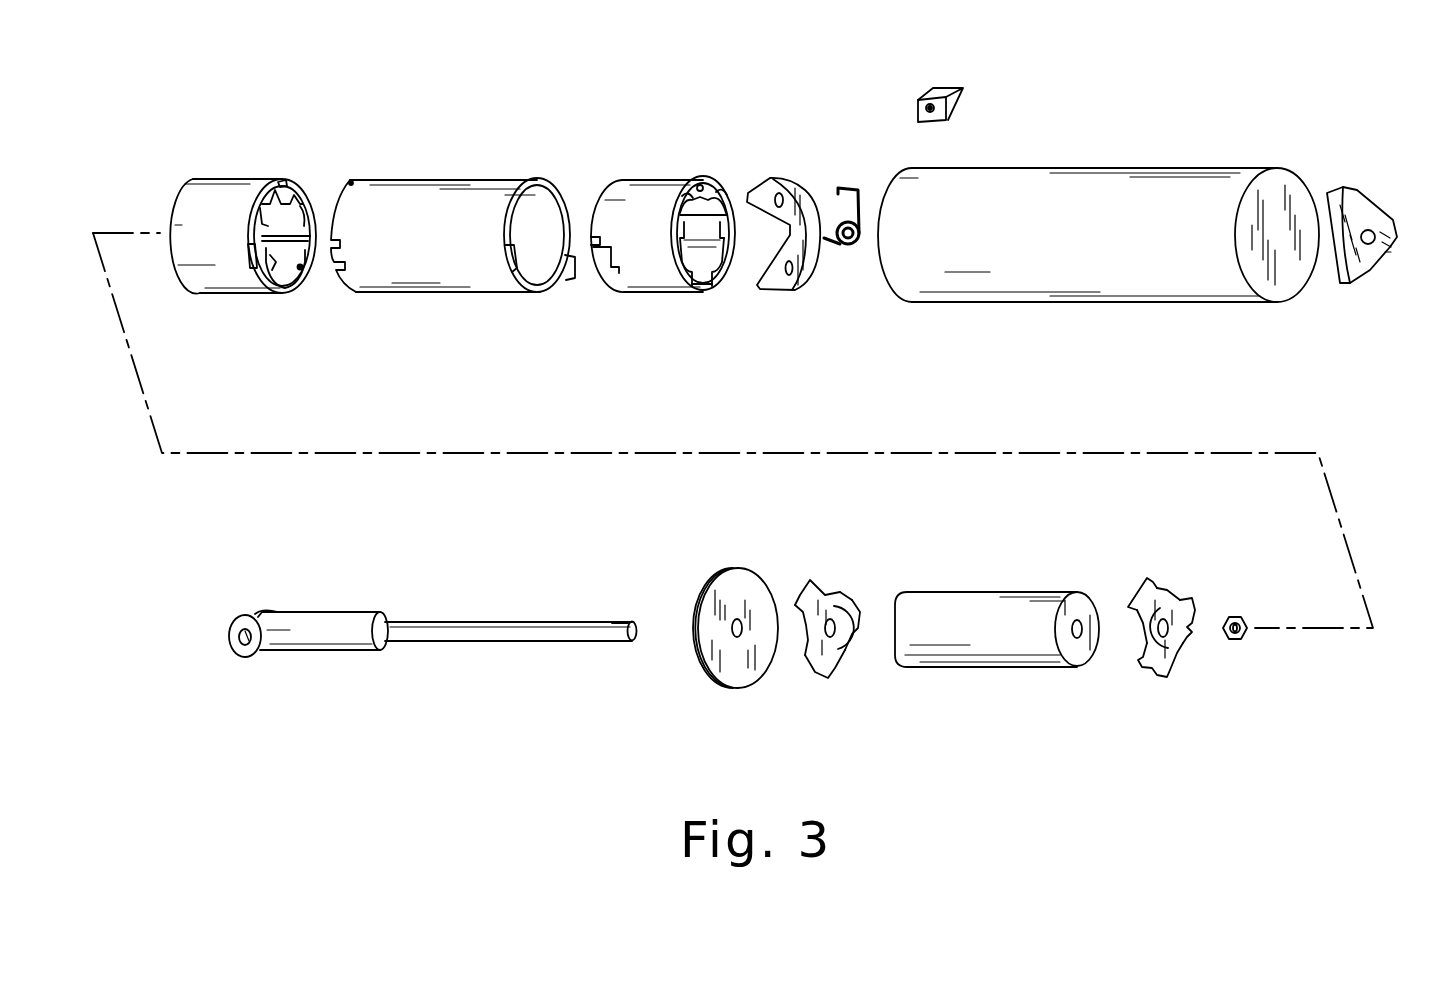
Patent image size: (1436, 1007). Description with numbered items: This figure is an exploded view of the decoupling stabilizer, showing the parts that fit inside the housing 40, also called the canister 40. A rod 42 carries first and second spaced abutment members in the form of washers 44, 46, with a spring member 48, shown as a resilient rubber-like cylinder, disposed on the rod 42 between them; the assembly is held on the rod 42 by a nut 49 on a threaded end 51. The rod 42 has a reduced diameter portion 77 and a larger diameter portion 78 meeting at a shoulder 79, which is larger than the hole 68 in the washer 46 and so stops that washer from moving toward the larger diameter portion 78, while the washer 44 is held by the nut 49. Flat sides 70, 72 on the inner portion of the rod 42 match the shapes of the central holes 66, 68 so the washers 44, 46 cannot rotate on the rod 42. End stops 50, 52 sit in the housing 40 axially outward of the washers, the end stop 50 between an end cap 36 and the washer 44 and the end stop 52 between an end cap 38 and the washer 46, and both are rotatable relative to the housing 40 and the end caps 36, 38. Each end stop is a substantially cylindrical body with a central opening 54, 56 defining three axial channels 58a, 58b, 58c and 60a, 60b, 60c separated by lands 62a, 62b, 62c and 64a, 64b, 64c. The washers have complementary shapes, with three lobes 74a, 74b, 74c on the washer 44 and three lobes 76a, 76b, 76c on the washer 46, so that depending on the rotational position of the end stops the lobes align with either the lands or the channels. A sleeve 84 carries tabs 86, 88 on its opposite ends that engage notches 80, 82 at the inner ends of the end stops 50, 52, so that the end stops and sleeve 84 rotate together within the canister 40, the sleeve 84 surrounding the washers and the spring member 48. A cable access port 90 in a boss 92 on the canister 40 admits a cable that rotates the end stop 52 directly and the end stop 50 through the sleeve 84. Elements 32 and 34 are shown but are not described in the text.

The end cap 32 is at (1370, 195).
The eye end of rod assembly 34 is at (238, 625).
The end cap 36 is at (1278, 197).
The end cap 38 is at (733, 590).
The housing 40 is at (1108, 183).
The rod 42 is at (340, 661).
The washer 44 is at (1175, 585).
The washer 46 is at (838, 579).
The spring member 48 is at (998, 600).
The nut 49 is at (1243, 640).
The end stop 50 is at (633, 169).
The threaded end 51 is at (617, 620).
The end stop 52 is at (217, 169).
The central opening 54 is at (700, 223).
The central opening 56 is at (282, 228).
The axial channel 58a is at (720, 190).
The axial channel 58b is at (705, 288).
The axial channel 58c is at (688, 195).
The axial channel 60a is at (298, 212).
The axial channel 60b is at (286, 292).
The axial channel 60c is at (262, 208).
The land 62a is at (725, 263).
The land 62b is at (677, 257).
The land 62c is at (718, 183).
The land 64a is at (312, 262).
The land 64b is at (268, 285).
The land 64c is at (292, 198).
The central hole 66 is at (1170, 638).
The central hole 68 is at (838, 632).
The flat side 70 is at (636, 625).
The flat side 72 is at (522, 635).
The lobe 74a is at (1190, 605).
The lobe 74b is at (1152, 680).
The lobe 74c is at (1138, 603).
The lobe 76a is at (858, 613).
The lobe 76b is at (822, 672).
The lobe 76c is at (805, 588).
The reduced diameter portion 77 is at (460, 625).
The larger diameter portion 78 is at (338, 620).
The shoulder 79 is at (385, 618).
The notch 80 is at (613, 268).
The notch 82 is at (282, 180).
The sleeve 84 is at (448, 180).
The tab 86 is at (550, 180).
The tab 88 is at (352, 178).
The cable access port 90 is at (918, 108).
The boss 92 is at (940, 95).